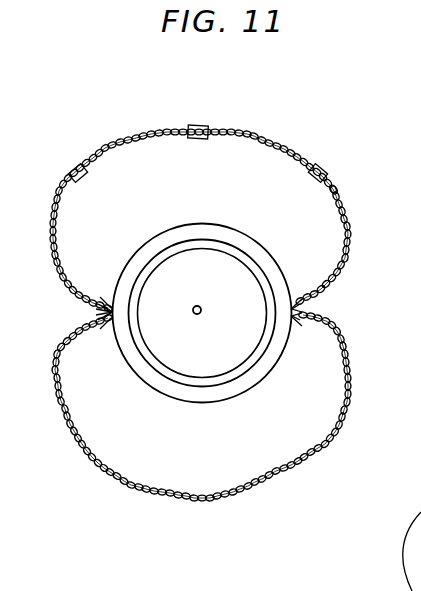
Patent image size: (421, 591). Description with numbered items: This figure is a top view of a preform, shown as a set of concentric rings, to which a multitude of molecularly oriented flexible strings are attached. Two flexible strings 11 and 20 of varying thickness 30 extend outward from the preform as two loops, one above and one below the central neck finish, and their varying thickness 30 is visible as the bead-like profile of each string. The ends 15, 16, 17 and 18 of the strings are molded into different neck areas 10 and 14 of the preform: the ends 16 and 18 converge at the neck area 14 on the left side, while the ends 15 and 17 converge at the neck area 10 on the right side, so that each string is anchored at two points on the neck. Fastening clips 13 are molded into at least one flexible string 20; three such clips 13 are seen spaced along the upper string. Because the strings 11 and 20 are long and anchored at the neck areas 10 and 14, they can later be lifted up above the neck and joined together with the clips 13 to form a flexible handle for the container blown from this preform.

The neck area 10 is at (300, 305).
The flexible string 11 is at (327, 446).
The fastening clips 13 is at (322, 166).
The neck area 14 is at (105, 312).
The end 15 is at (297, 298).
The end 16 is at (108, 301).
The end 17 is at (297, 321).
The end 18 is at (109, 326).
The flexible string 20 is at (340, 193).
The varying thickness 30 is at (348, 225).